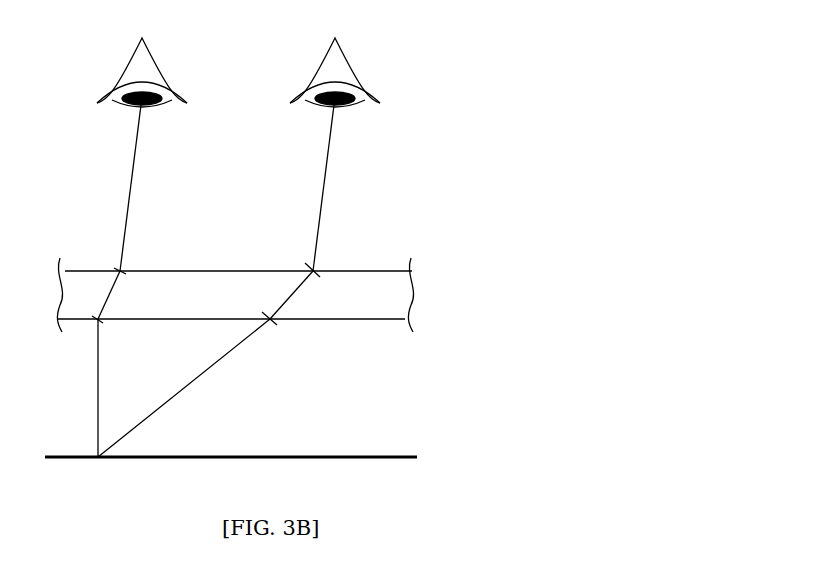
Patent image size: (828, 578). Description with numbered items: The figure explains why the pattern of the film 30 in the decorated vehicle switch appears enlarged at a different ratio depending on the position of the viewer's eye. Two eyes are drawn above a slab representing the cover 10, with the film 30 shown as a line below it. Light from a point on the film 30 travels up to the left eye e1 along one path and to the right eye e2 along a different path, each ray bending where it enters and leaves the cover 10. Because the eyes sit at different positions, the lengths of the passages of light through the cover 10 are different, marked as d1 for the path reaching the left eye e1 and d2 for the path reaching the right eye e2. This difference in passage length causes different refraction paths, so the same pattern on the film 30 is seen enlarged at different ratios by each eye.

The left eye e1 is at (155, 62).
The right eye e2 is at (347, 62).
The cover 10 is at (362, 287).
The length of light passage d1 is at (109, 291).
The length of light passage d2 is at (289, 294).
The film 30 is at (417, 457).